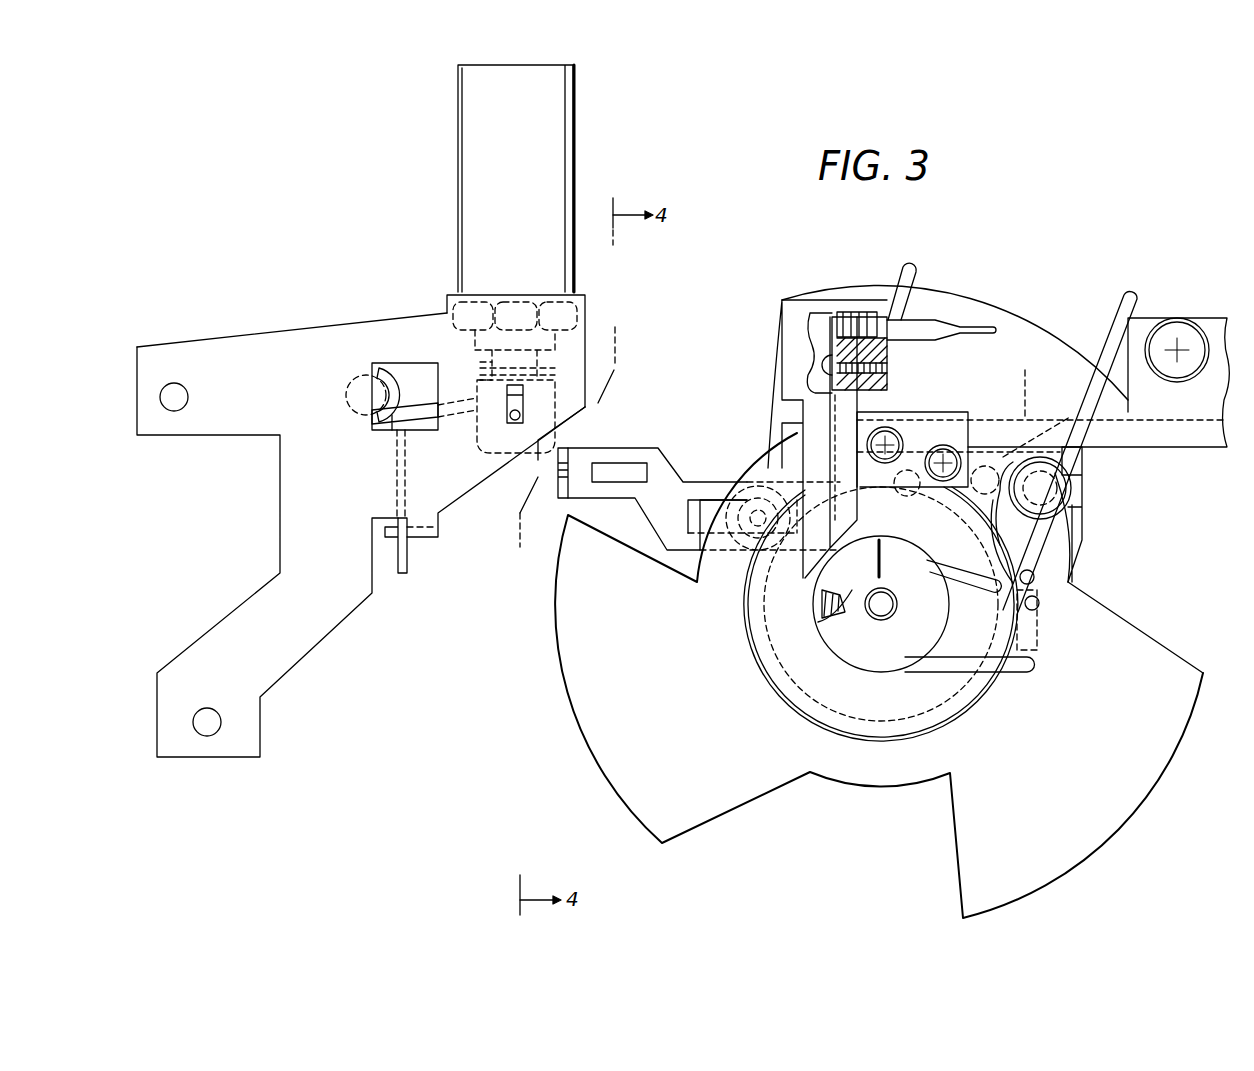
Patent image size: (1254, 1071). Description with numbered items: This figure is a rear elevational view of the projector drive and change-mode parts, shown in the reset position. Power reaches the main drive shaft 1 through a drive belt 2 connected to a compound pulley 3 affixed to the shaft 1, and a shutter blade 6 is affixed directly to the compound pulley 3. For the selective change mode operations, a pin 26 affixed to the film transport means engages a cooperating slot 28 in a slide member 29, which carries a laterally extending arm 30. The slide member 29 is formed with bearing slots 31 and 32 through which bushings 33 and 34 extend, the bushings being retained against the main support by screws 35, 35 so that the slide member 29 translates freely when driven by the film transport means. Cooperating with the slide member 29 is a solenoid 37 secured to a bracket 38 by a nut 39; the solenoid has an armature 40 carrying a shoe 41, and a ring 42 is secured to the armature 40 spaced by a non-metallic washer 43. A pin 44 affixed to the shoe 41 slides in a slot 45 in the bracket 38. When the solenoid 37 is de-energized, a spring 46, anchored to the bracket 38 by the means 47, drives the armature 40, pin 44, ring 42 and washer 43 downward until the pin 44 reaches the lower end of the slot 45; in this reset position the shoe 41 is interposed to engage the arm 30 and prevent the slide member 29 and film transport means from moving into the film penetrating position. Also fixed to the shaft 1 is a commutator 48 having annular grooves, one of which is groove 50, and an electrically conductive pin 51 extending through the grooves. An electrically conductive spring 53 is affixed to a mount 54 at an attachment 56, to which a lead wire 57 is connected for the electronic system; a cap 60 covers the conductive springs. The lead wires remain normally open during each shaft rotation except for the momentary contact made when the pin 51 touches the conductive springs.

The main drive shaft 1 is at (881, 612).
The drive belt 2 is at (1117, 328).
The compound pulley 3 is at (957, 710).
The shutter blade 6 is at (1177, 667).
The pin 26 is at (1042, 615).
The slot 28 is at (1057, 653).
The slide member 29 is at (628, 448).
The arm 30 is at (558, 485).
The bearing slot 31 is at (1074, 500).
The bearing slot 32 is at (697, 503).
The bushing 33 is at (1072, 482).
The bushing 34 is at (750, 480).
The screw 35 is at (742, 552).
The solenoid 37 is at (567, 135).
The bracket 38 is at (302, 340).
The nut 39 is at (588, 308).
The armature 40 is at (472, 349).
The shoe 41 is at (560, 437).
The ring 42 is at (565, 372).
The washer 43 is at (475, 366).
The pin 44 is at (507, 420).
The slot 45 is at (507, 395).
The spring 46 is at (407, 413).
The anchoring means 47 is at (403, 363).
The commutator 48 is at (860, 675).
The annular groove 50 is at (828, 652).
The electrically conductive pin 51 is at (820, 614).
The electrically conductive spring 53 is at (820, 600).
The mount 54 is at (862, 392).
The attachment 56 is at (887, 357).
The lead wire 57 is at (920, 323).
The cap 60 is at (782, 347).